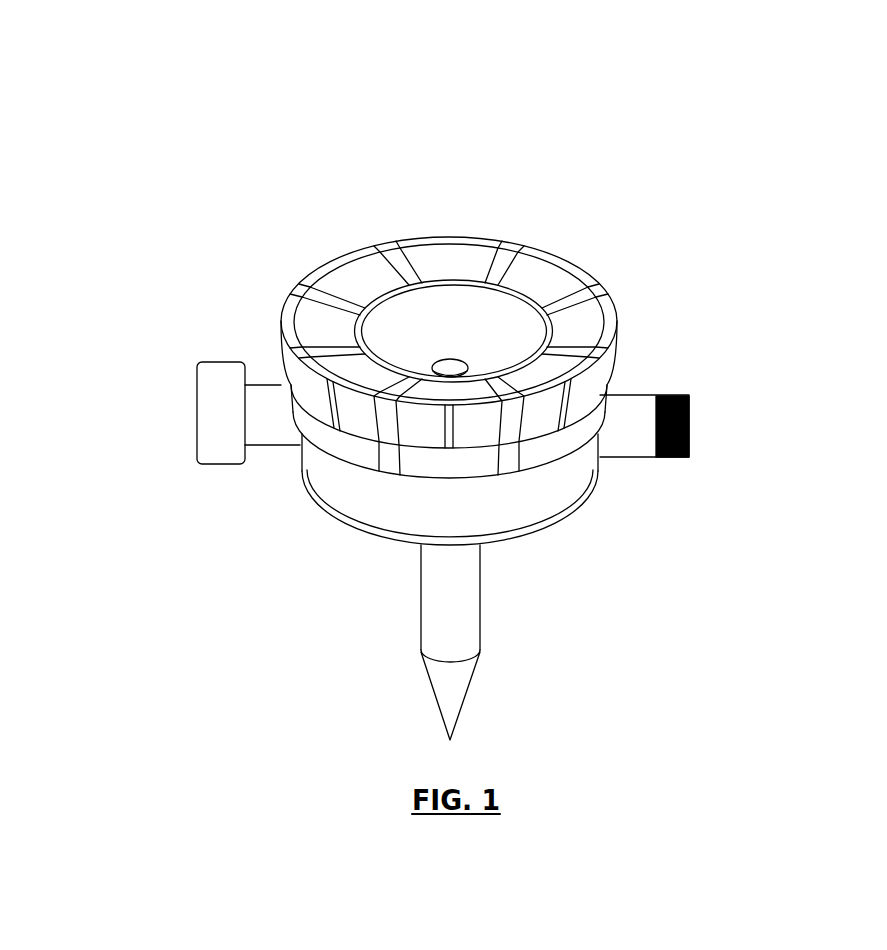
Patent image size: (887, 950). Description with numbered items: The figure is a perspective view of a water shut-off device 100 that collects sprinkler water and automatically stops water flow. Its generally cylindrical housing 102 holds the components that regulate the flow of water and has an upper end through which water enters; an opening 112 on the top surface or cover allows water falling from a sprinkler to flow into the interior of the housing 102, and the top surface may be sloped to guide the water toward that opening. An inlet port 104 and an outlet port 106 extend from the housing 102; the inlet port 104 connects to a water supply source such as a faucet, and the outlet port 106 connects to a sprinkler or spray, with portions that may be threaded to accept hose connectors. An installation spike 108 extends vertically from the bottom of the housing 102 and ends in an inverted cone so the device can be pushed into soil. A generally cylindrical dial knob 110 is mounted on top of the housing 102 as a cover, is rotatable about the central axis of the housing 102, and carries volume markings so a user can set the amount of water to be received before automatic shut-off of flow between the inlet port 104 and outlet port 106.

The water shut-off device 100 is at (534, 210).
The housing 102 is at (540, 495).
The inlet port 104 is at (207, 448).
The outlet port 106 is at (642, 408).
The installation spike 108 is at (453, 669).
The dial knob 110 is at (307, 292).
The opening 112 is at (450, 362).